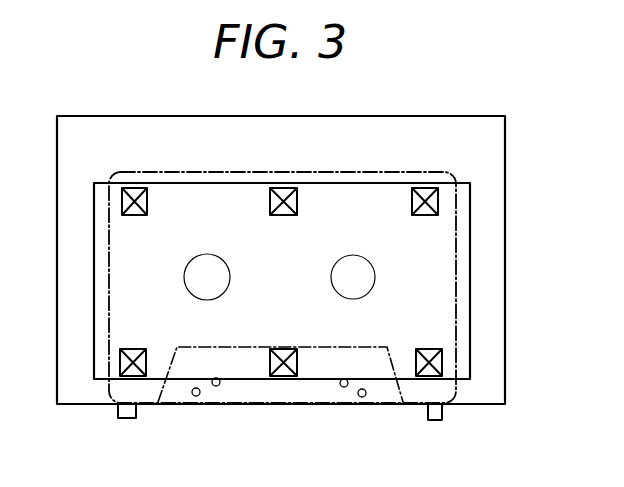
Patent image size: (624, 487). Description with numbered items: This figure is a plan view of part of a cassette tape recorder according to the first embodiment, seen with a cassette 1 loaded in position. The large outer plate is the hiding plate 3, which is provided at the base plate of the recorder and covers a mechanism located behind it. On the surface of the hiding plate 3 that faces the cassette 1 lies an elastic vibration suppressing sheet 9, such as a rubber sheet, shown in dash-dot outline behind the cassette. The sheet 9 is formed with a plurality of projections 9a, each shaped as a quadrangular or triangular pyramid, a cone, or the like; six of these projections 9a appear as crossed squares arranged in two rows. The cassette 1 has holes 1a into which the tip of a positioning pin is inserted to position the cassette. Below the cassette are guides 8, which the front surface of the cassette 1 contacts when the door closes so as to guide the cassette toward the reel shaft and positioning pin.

The cassette 1 is at (445, 316).
The hole 1a is at (218, 387).
The hiding plate 3 is at (493, 148).
The guide 8 is at (128, 420).
The elastic vibration suppressing sheet 9 is at (480, 231).
The projections 9a is at (147, 204).